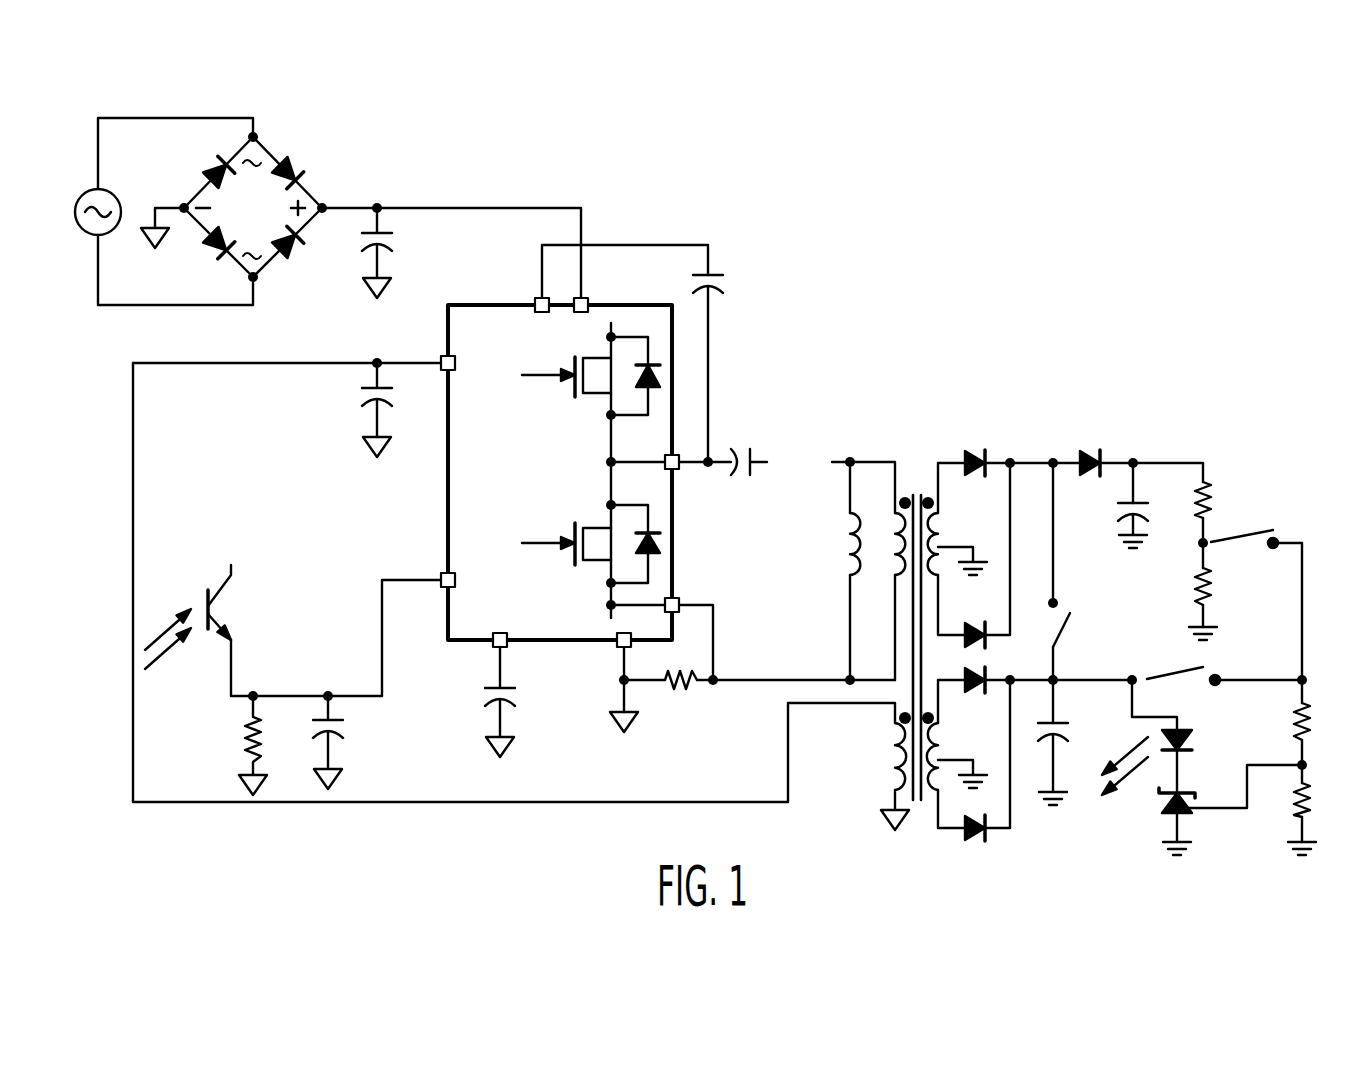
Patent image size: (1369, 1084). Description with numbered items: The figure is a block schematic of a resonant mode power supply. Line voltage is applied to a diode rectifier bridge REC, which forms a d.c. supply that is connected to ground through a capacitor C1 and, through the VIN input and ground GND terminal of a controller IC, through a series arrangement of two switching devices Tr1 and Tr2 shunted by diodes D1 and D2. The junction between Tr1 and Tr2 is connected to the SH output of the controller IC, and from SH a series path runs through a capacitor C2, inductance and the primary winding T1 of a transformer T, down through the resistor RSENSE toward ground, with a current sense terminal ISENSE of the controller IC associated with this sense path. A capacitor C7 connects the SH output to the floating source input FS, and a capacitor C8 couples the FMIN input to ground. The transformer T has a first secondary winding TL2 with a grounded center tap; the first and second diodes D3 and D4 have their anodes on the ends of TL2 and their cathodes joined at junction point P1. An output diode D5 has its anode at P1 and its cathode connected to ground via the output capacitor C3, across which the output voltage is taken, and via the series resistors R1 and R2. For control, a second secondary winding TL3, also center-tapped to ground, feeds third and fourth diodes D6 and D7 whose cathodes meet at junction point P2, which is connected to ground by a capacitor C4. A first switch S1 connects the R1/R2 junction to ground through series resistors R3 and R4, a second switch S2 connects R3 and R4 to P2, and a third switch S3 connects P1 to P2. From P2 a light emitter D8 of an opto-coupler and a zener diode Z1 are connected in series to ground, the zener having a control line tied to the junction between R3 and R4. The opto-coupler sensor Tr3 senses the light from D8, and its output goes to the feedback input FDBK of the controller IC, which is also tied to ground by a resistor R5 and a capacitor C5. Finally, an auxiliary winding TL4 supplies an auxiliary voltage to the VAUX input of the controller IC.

The diode rectifier bridge REC is at (310, 193).
The capacitor C1 is at (393, 332).
The controller IC is at (490, 304).
The floating source input FS is at (541, 296).
The VIN input VIN is at (584, 296).
The capacitor C7 is at (723, 365).
The VAUX input VAUX is at (443, 355).
The feedback input FDBK is at (445, 572).
The SH output SH is at (680, 470).
The current sense input ISENSE is at (680, 597).
The FMIN input FMIN is at (497, 649).
The ground terminal GND is at (620, 649).
The switching device Tr1 is at (592, 357).
The diode D1 is at (632, 376).
The switching device Tr2 is at (592, 523).
The diode D2 is at (632, 544).
The capacitor C2 is at (746, 480).
The capacitor C8 is at (517, 702).
The resistor RSENSE is at (669, 698).
The sensor Tr3 is at (223, 584).
The resistor R5 is at (239, 745).
The capacitor C5 is at (346, 742).
The transformer T is at (898, 604).
The primary winding T1 is at (893, 547).
The first secondary winding TL2 is at (943, 532).
The second secondary winding TL3 is at (943, 748).
The auxiliary winding TL4 is at (893, 758).
The first diode D3 is at (963, 452).
The second diode D4 is at (966, 622).
The output diode D5 is at (1082, 452).
The third diode D6 is at (963, 673).
The fourth diode D7 is at (969, 842).
The junction point P1 is at (1053, 459).
The junction point P2 is at (1031, 663).
The output capacitor C3 is at (1114, 525).
The capacitor C4 is at (1069, 763).
The resistor R1 is at (1187, 500).
The resistor R2 is at (1190, 604).
The resistor R3 is at (1320, 721).
The resistor R4 is at (1317, 819).
The first switch S1 is at (1244, 555).
The second switch S2 is at (1183, 692).
The third switch S3 is at (1077, 628).
The light emitter D8 is at (1161, 764).
The zener diode Z1 is at (1164, 821).